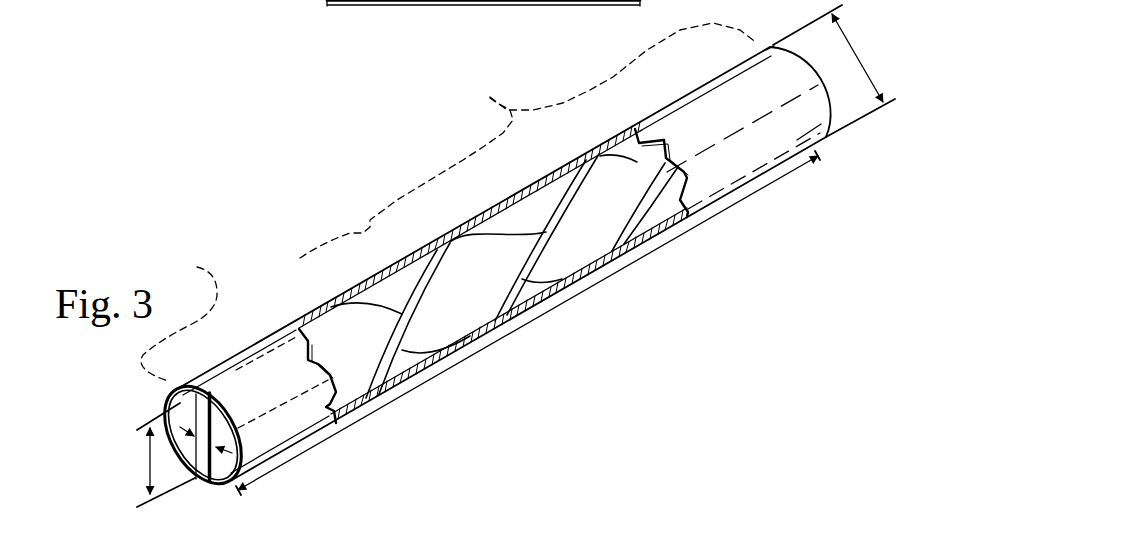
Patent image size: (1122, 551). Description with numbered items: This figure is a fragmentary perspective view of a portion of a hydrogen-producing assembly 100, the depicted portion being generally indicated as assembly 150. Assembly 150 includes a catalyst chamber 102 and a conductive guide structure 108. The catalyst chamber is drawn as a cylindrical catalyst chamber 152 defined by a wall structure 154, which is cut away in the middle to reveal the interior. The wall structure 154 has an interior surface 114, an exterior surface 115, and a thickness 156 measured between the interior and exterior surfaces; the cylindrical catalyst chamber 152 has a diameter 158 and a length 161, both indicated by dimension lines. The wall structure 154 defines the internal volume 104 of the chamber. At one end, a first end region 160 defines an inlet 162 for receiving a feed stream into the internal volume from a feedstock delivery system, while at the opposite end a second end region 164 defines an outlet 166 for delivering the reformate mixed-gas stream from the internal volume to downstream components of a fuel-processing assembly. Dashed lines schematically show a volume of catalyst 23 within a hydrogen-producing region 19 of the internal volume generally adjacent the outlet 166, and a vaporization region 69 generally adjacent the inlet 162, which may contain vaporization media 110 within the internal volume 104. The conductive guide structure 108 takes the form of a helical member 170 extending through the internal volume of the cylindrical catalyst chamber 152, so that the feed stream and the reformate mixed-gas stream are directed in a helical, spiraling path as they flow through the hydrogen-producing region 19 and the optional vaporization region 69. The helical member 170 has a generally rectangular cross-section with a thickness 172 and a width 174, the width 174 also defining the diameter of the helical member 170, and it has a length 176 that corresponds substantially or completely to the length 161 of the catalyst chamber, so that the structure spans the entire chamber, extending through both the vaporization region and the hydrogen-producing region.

The hydrogen-producing assembly 100 is at (307, 180).
The assembly 150 is at (421, 177).
The hydrogen-producing region 19 is at (610, 66).
The catalyst chamber 102 is at (677, 69).
The cylindrical catalyst chamber 152 is at (648, 105).
The wall structure 154 is at (596, 154).
The second end region 164 is at (771, 44).
The outlet 166 is at (829, 93).
The diameter 158 is at (858, 59).
The interior surface 114 is at (537, 184).
The thickness 156 is at (512, 192).
The volume of catalyst 23 is at (665, 208).
The conductive guide structure 108 is at (576, 211).
The length 161 is at (738, 203).
The length 176 is at (678, 235).
The internal volume 104 is at (388, 295).
The vaporization media 110 is at (337, 335).
The helical member 170 is at (446, 284).
The exterior surface 115 is at (472, 344).
The vaporization region 69 is at (179, 315).
The first end region 160 is at (175, 385).
The inlet 162 is at (218, 420).
The width 174 is at (147, 462).
The thickness 172 is at (230, 455).